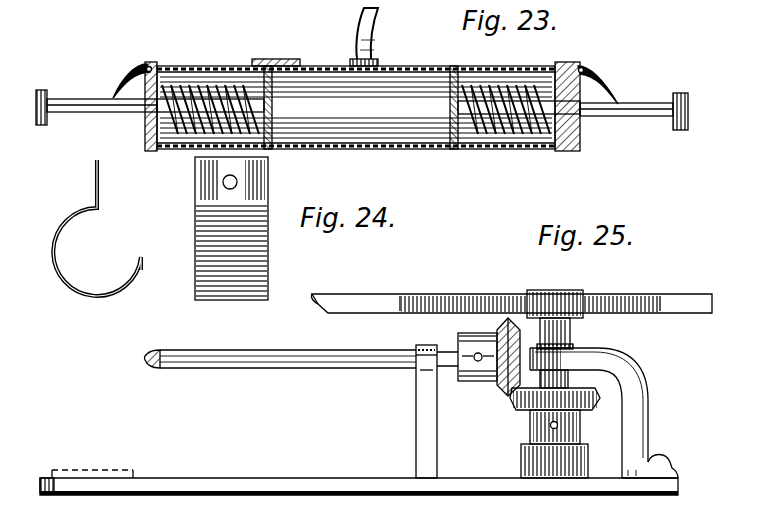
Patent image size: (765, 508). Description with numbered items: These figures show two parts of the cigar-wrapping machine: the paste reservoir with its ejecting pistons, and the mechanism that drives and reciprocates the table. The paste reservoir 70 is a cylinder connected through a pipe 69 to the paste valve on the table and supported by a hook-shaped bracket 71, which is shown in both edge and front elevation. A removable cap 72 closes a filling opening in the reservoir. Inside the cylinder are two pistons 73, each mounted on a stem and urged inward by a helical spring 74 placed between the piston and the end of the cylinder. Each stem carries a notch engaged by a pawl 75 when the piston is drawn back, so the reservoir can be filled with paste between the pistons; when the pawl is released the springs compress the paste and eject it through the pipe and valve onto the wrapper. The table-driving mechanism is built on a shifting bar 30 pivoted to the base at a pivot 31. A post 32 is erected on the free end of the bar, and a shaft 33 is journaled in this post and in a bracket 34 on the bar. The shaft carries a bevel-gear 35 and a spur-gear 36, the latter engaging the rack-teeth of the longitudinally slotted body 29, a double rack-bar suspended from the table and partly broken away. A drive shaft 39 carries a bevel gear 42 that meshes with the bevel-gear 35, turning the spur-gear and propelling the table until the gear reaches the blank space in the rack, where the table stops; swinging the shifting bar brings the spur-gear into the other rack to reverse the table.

In FIG. 23, the pipe 69 is at (374, 37).
In FIG. 23, the paste reservoir 70 is at (440, 107).
In FIG. 24, the bracket 71 is at (160, 228).
In FIG. 23, the removable cap 72 is at (276, 94).
In FIG. 23, the piston 73 is at (454, 149).
In FIG. 23, the helical spring 74 is at (212, 78).
In FIG. 23, the pawl 75 is at (370, 83).
In FIG. 25, the longitudinally slotted body 29 is at (511, 293).
In FIG. 25, the shifting bar 30 is at (359, 479).
In FIG. 25, the pivot 31 is at (92, 462).
In FIG. 25, the post 32 is at (567, 424).
In FIG. 25, the shaft 33 is at (630, 364).
In FIG. 25, the bracket 34 is at (648, 405).
In FIG. 25, the bevel-gear 35 is at (512, 404).
In FIG. 25, the spur-gear 36 is at (555, 310).
In FIG. 25, the shaft 39 is at (301, 411).
In FIG. 25, the bevel gear 42 is at (497, 386).